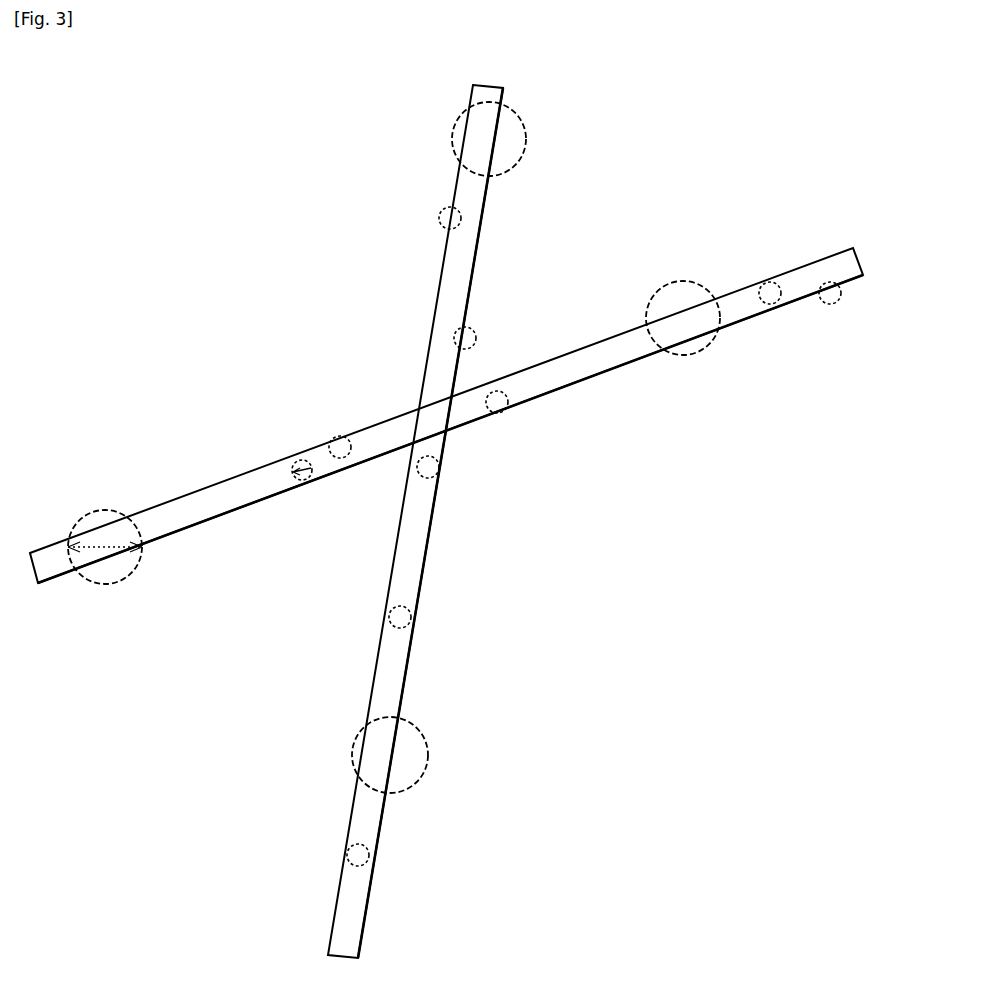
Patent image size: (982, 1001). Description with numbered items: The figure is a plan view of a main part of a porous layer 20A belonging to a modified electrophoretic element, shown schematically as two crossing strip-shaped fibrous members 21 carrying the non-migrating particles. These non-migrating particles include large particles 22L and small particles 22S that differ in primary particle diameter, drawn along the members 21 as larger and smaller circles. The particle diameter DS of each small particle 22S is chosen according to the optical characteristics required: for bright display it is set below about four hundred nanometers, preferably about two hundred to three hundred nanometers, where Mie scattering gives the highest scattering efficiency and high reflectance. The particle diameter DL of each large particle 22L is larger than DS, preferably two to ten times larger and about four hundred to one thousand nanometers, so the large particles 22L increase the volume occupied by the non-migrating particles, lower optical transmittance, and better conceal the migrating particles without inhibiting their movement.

The porous layer 20A is at (620, 149).
The strip-shaped member 21 is at (466, 280).
The large particles 22L is at (105, 510).
The small particles 22S is at (299, 482).
The particle diameter of small particles DS is at (302, 462).
The particle diameter of large particles DL is at (110, 552).